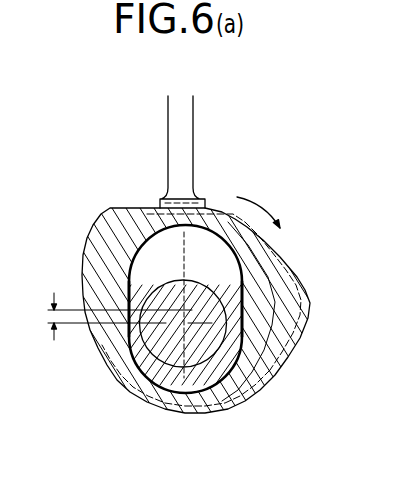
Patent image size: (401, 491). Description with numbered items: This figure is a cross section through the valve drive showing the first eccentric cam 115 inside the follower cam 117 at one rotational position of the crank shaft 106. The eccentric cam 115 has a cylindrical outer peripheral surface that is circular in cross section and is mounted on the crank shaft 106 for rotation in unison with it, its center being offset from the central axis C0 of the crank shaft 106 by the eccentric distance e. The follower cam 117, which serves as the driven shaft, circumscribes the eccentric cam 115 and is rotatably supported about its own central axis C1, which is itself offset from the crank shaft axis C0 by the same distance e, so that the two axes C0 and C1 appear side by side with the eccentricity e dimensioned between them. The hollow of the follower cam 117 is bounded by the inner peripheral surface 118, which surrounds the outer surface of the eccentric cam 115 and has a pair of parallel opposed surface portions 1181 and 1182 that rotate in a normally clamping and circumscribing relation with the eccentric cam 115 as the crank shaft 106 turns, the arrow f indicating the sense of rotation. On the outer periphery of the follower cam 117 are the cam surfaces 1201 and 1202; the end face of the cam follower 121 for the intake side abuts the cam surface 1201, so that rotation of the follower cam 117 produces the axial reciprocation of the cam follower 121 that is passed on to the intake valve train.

The crank shaft 106 is at (178, 332).
The eccentric cam 115 is at (239, 356).
The follower cam 117 is at (238, 396).
The inner peripheral surface 118 is at (197, 232).
The opposed surface portion 1181 is at (129, 296).
The opposed surface portion 1182 is at (236, 292).
The cam surface 1201 is at (104, 226).
The cam surface 1202 is at (308, 298).
The cam follower 121 is at (193, 148).
The central axis of follower cam C1 is at (126, 297).
The central axis of crank shaft C0 is at (185, 324).
The eccentricity e is at (45, 317).
The direction of rotation f is at (250, 203).